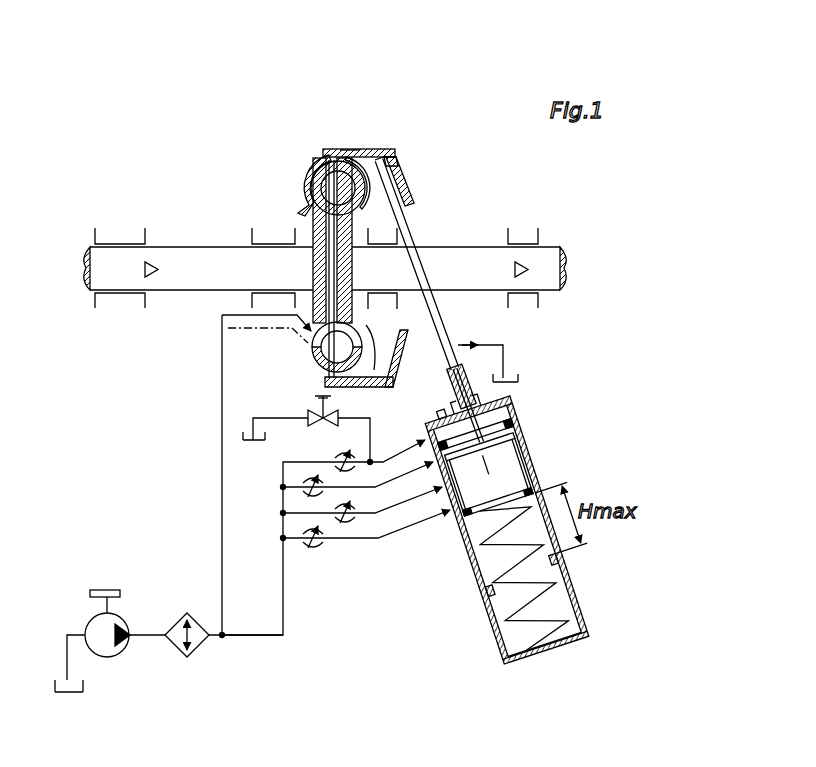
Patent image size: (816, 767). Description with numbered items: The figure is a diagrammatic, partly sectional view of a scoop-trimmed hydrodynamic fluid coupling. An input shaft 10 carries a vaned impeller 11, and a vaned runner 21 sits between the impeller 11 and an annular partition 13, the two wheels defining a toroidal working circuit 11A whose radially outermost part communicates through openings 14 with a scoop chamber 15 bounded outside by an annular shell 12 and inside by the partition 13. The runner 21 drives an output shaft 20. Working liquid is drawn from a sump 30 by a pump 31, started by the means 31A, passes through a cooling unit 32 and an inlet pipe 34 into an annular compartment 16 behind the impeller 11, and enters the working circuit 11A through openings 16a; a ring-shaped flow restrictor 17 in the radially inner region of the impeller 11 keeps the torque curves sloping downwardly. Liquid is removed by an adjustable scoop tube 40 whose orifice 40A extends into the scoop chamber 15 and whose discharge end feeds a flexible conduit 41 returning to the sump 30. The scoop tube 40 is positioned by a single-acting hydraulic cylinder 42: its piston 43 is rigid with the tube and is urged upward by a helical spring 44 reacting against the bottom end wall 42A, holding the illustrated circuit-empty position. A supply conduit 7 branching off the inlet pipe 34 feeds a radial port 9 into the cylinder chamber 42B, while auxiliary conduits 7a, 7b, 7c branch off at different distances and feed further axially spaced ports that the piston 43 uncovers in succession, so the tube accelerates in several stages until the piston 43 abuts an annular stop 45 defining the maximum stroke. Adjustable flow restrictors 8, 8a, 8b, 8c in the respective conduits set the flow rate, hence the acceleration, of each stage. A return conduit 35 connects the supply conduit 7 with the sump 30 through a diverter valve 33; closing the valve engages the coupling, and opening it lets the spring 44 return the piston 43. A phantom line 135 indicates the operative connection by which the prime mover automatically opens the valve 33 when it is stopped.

The supply conduit 7 is at (401, 440).
The auxiliary conduit 7a is at (414, 472).
The auxiliary conduit 7b is at (390, 516).
The auxiliary conduit 7c is at (350, 541).
The adjustable flow restrictor 8 is at (334, 457).
The adjustable flow restrictor 8a is at (312, 481).
The adjustable flow restrictor 8b is at (340, 506).
The adjustable flow restrictor 8c is at (305, 533).
The port 9 is at (439, 405).
The input shaft 10 is at (197, 246).
The impeller 11 is at (280, 166).
The working circuit 11A is at (355, 150).
The annular shell 12 is at (414, 186).
The annular partition 13 is at (381, 264).
The openings 14 is at (374, 150).
The scoop chamber 15 is at (412, 155).
The annular compartment 16 is at (305, 224).
The openings 16a is at (345, 326).
The ring-shaped flow restrictor 17 is at (303, 152).
The output shaft 20 is at (488, 246).
The runner 21 is at (343, 148).
The sump 30 is at (253, 448).
The pump 31 is at (112, 657).
The motor starting means 31A is at (110, 589).
The cooling unit 32 is at (182, 660).
The diverter valve 33 is at (340, 416).
The inlet pipe 34 is at (222, 378).
The return conduit 35 is at (319, 398).
The scoop tube 40 is at (413, 240).
The scooping orifice 40A is at (388, 152).
The flexible conduit 41 is at (474, 382).
The hydraulic cylinder 42 is at (525, 431).
The bottom end wall 42A is at (535, 666).
The cylinder chamber 42B is at (512, 404).
The piston 43 is at (526, 456).
The helical spring 44 is at (548, 614).
The annular stop 45 is at (562, 562).
The phantom line 135 is at (253, 330).